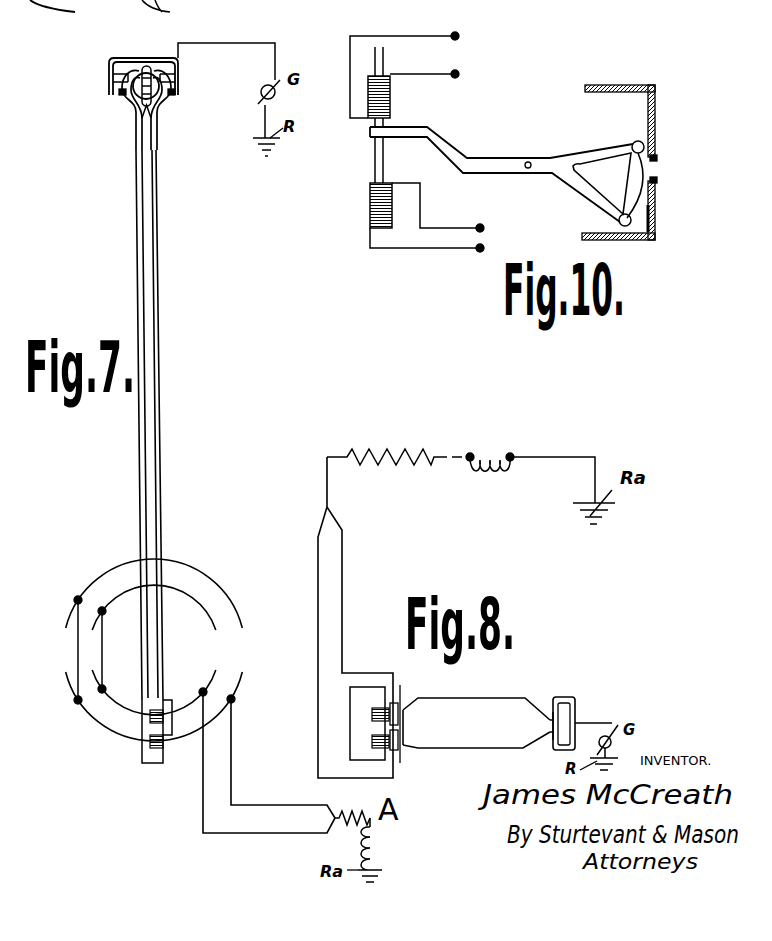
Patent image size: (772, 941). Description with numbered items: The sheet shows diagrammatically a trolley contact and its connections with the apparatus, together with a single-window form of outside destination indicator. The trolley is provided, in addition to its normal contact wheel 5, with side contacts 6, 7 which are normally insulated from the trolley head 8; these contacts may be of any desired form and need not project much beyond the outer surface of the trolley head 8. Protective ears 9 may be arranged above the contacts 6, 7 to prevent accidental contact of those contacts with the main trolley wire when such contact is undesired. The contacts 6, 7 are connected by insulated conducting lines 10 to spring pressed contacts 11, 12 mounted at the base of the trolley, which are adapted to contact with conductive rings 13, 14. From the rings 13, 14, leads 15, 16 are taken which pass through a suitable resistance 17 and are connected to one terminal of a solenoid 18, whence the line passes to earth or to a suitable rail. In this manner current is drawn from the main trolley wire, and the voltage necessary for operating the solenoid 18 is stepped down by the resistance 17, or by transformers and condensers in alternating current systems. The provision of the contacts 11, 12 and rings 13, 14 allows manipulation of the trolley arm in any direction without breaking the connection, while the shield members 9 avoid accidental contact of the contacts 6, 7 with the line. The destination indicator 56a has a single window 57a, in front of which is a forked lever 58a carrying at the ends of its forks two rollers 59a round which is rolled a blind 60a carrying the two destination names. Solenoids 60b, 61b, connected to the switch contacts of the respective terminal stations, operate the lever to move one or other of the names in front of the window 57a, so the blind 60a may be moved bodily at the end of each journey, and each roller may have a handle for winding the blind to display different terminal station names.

In FIG. 7, the contact wheel 5 is at (138, 108).
In FIG. 7, the side contact 6 is at (175, 92).
In FIG. 8, the side contact 6 is at (553, 735).
In FIG. 7, the side contact 7 is at (122, 95).
In FIG. 8, the side contact 7 is at (553, 710).
In FIG. 7, the trolley head 8 is at (149, 112).
In FIG. 7, the protective ears 9 is at (110, 76).
In FIG. 7, the insulated conducting lines 10 is at (152, 312).
In FIG. 8, the insulated conducting lines 10 is at (490, 696).
In FIG. 7, the spring pressed contact 11 is at (170, 713).
In FIG. 7, the spring pressed contact 12 is at (163, 748).
In FIG. 7, the conductive ring 13 is at (198, 602).
In FIG. 8, the conductive ring 13 is at (400, 720).
In FIG. 7, the conductive ring 14 is at (243, 636).
In FIG. 8, the conductive ring 14 is at (402, 743).
In FIG. 7, the lead 15 is at (237, 779).
In FIG. 8, the lead 15 is at (350, 648).
In FIG. 7, the lead 16 is at (248, 835).
In FIG. 8, the lead 16 is at (395, 780).
In FIG. 7, the resistance 17 is at (365, 812).
In FIG. 8, the resistance 17 is at (355, 448).
In FIG. 7, the solenoid 18 is at (378, 853).
In FIG. 8, the solenoid 18 is at (480, 450).
In FIG. 10, the indicator 56a is at (640, 111).
In FIG. 10, the window 57a is at (657, 168).
In FIG. 10, the forked lever 58a is at (535, 163).
In FIG. 10, the rollers 59a is at (633, 143).
In FIG. 10, the blind 60a is at (647, 215).
In FIG. 10, the solenoid 60b is at (390, 100).
In FIG. 10, the solenoid 61b is at (371, 215).